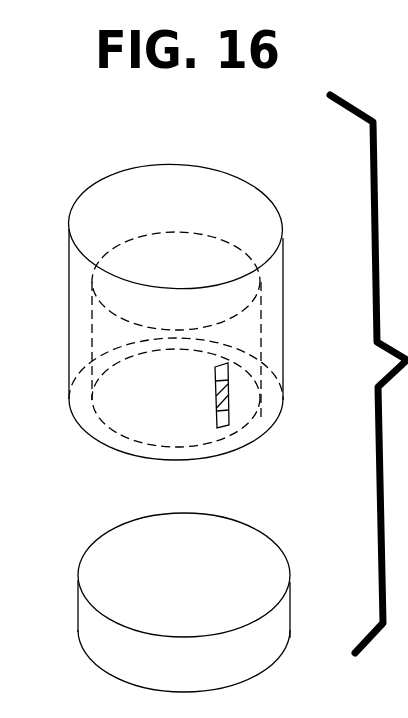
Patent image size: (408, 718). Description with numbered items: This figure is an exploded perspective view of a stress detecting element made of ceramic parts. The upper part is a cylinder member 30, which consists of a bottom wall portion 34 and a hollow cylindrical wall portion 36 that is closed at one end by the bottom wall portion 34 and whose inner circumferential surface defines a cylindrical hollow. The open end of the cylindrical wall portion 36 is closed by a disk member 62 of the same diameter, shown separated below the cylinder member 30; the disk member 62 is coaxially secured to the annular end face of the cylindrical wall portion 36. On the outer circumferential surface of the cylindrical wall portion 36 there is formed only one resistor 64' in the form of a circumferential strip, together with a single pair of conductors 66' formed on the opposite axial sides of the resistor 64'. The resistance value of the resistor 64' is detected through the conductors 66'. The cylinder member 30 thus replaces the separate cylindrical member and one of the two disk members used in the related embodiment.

The cylinder member 30 is at (52, 343).
The bottom wall portion 34 is at (240, 195).
The cylindrical wall portion 36 is at (70, 312).
The disk member 62 is at (263, 559).
The resistor 64' is at (281, 395).
The conductors 66' is at (282, 386).